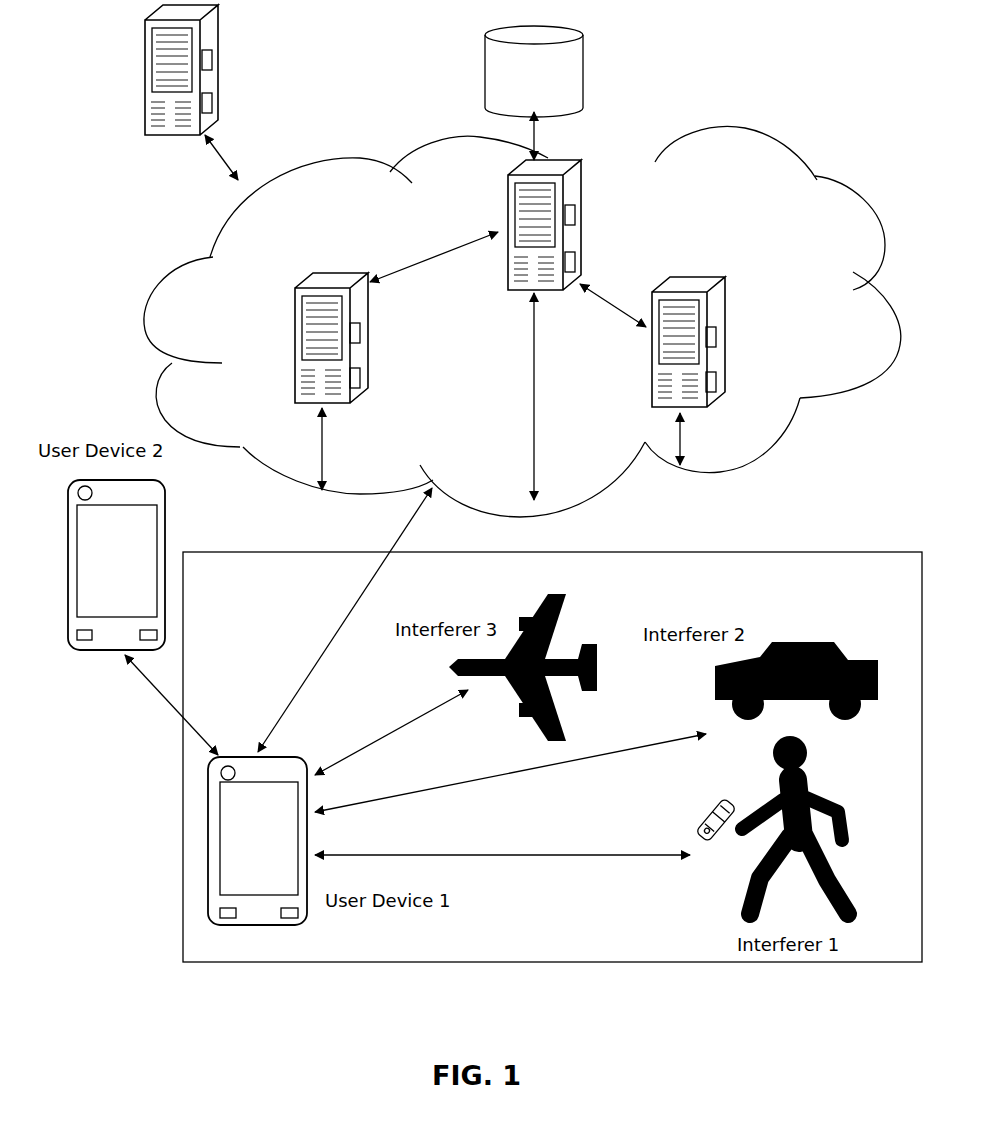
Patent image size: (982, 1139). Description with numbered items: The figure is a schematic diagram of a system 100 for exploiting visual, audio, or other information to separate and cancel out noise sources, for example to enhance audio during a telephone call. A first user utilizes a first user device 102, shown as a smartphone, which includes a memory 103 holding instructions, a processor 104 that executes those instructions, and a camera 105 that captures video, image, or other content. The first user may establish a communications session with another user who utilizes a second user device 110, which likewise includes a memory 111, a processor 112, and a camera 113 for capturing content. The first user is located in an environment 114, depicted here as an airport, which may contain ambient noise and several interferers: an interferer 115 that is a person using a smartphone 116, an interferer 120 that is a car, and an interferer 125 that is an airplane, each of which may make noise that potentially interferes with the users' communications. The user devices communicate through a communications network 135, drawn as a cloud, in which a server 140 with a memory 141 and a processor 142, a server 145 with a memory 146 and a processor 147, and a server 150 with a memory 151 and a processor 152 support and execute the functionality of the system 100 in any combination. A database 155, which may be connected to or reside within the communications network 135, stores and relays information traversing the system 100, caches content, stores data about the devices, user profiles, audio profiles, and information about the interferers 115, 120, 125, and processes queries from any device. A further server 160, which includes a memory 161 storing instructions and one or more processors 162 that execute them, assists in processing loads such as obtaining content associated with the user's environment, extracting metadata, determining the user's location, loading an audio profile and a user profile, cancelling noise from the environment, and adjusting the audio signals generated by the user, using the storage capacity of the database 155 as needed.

The system 100 is at (541, 985).
The first user device 102 is at (203, 886).
The memory 103 is at (227, 918).
The processor 104 is at (290, 918).
The camera 105 is at (220, 773).
The second user device 110 is at (142, 598).
The memory 111 is at (84, 642).
The processor 112 is at (157, 635).
The camera 113 is at (78, 493).
The environment 114 is at (667, 963).
The interferer 115 is at (848, 920).
The smartphone 116 is at (707, 840).
The interferer 120 is at (869, 658).
The interferer 125 is at (597, 640).
The communications network 135 is at (178, 357).
The server 140 is at (547, 225).
The memory 141 is at (580, 216).
The processor 142 is at (580, 263).
The server 145 is at (332, 338).
The memory 146 is at (366, 333).
The processor 147 is at (366, 378).
The server 150 is at (748, 342).
The memory 151 is at (722, 335).
The processor 152 is at (722, 380).
The database 155 is at (534, 71).
The server 160 is at (182, 70).
The memory 161 is at (216, 103).
The processors 162 is at (216, 62).